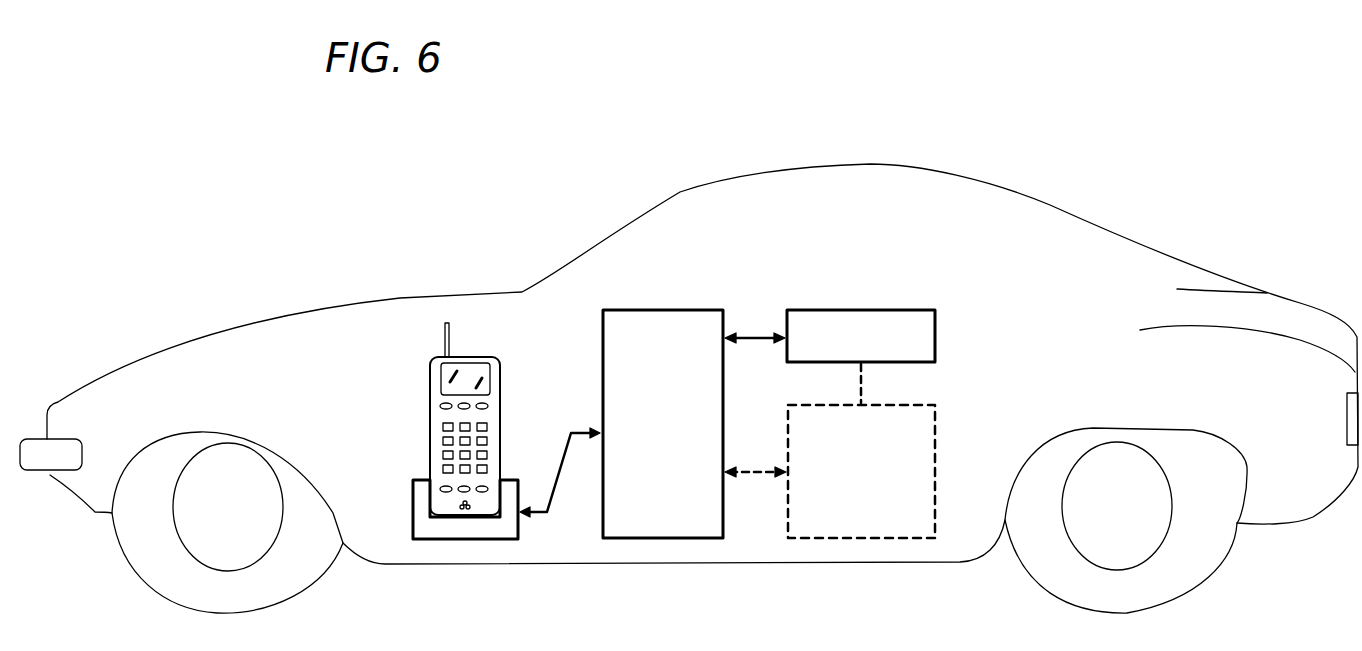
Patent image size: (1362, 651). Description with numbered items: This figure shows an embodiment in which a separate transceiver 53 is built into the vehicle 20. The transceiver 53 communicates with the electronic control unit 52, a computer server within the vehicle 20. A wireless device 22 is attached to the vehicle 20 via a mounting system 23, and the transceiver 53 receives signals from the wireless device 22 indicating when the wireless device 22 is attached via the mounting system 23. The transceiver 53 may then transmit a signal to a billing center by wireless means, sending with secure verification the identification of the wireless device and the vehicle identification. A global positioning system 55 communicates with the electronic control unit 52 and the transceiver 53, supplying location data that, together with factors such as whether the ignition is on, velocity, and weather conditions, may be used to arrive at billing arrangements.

The vehicle 20 is at (715, 185).
The wireless device 22 is at (478, 357).
The mounting system 23 is at (413, 498).
The electronic control unit 52 is at (660, 310).
The transceiver 53 is at (848, 310).
The global positioning system 55 is at (937, 433).